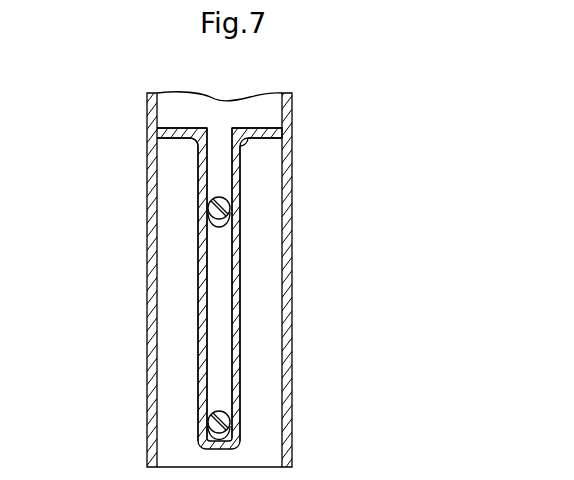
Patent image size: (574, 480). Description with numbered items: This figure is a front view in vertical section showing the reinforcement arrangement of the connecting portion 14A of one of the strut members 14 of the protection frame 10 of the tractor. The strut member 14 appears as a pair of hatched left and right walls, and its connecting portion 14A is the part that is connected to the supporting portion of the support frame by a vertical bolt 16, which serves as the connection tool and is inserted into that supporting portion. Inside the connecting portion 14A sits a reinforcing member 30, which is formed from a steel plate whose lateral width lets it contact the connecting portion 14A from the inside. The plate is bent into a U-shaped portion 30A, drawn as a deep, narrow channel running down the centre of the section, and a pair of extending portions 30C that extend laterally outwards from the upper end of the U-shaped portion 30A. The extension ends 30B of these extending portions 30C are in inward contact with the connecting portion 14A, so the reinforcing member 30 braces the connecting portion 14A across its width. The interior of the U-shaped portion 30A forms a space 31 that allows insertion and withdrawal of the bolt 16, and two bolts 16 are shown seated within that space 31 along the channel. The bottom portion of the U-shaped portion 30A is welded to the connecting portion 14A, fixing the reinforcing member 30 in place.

The protection frame 10 is at (292, 100).
The connecting portion 14A is at (292, 161).
The strut member 14 is at (354, 280).
The bolt 16 is at (230, 205).
The reinforcing member 30 is at (239, 293).
The U-shaped portion 30A is at (198, 305).
The extension end 30B is at (160, 131).
The extending portion 30C is at (254, 129).
The space 31 is at (238, 340).